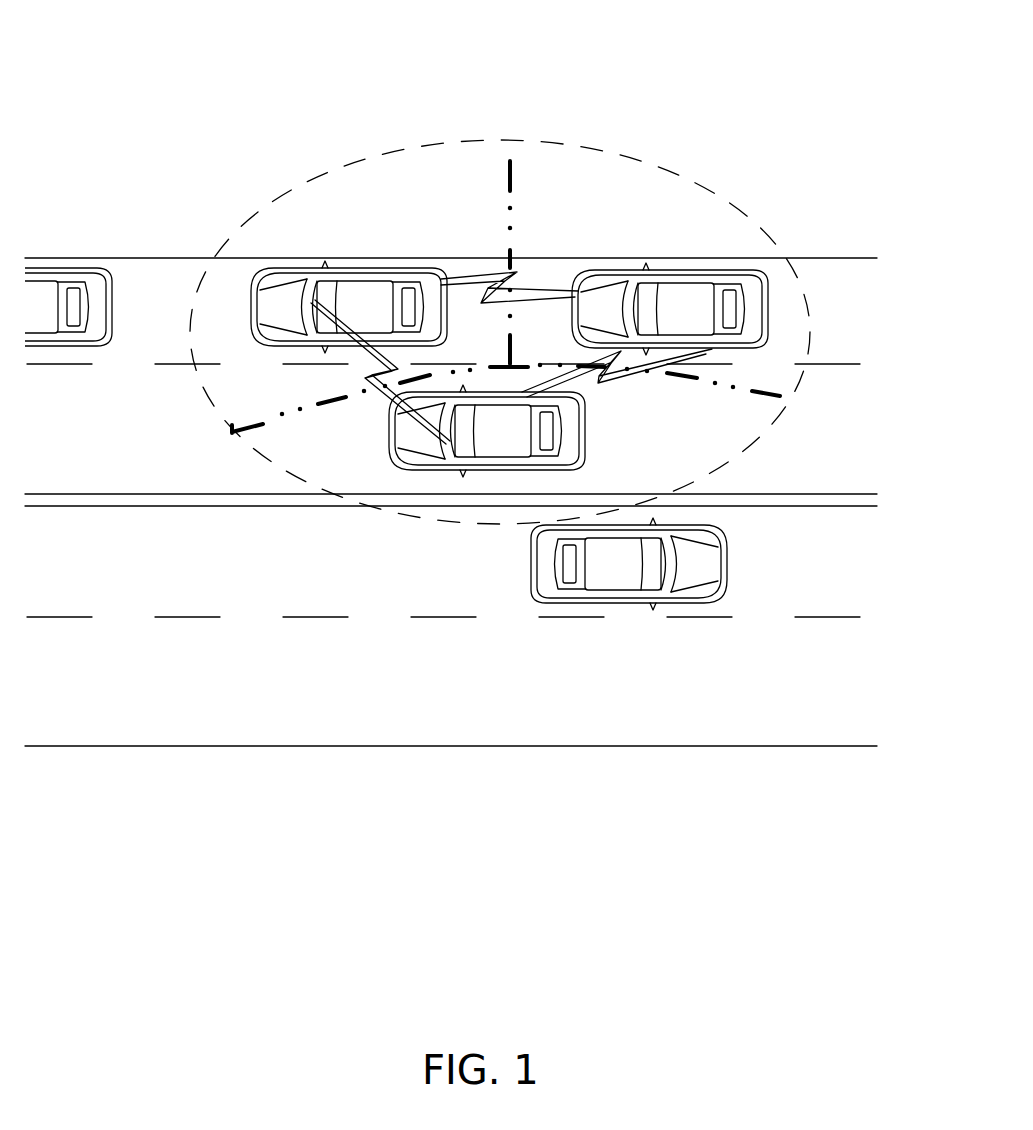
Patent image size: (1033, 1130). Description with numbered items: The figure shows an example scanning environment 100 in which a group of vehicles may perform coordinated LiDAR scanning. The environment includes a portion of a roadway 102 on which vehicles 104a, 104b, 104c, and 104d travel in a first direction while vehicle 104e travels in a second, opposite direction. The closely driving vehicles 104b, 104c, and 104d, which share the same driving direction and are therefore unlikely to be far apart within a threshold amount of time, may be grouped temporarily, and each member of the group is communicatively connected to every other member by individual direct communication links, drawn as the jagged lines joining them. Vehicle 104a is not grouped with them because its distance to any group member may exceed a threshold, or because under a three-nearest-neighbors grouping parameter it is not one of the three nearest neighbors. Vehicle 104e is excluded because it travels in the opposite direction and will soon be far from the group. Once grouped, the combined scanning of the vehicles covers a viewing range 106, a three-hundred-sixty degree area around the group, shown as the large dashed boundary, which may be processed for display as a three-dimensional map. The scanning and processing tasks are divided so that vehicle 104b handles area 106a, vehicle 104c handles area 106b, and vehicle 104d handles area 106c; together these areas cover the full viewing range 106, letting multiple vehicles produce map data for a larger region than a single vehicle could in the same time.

The scanning environment 100 is at (120, 68).
The roadway 102 is at (140, 254).
The vehicle 104a is at (112, 308).
The vehicle 104b is at (338, 270).
The vehicle 104c is at (683, 275).
The vehicle 104d is at (585, 438).
The vehicle 104e is at (728, 562).
The viewing range 106 is at (611, 152).
The area 106a is at (338, 174).
The area 106b is at (690, 188).
The area 106c is at (386, 496).